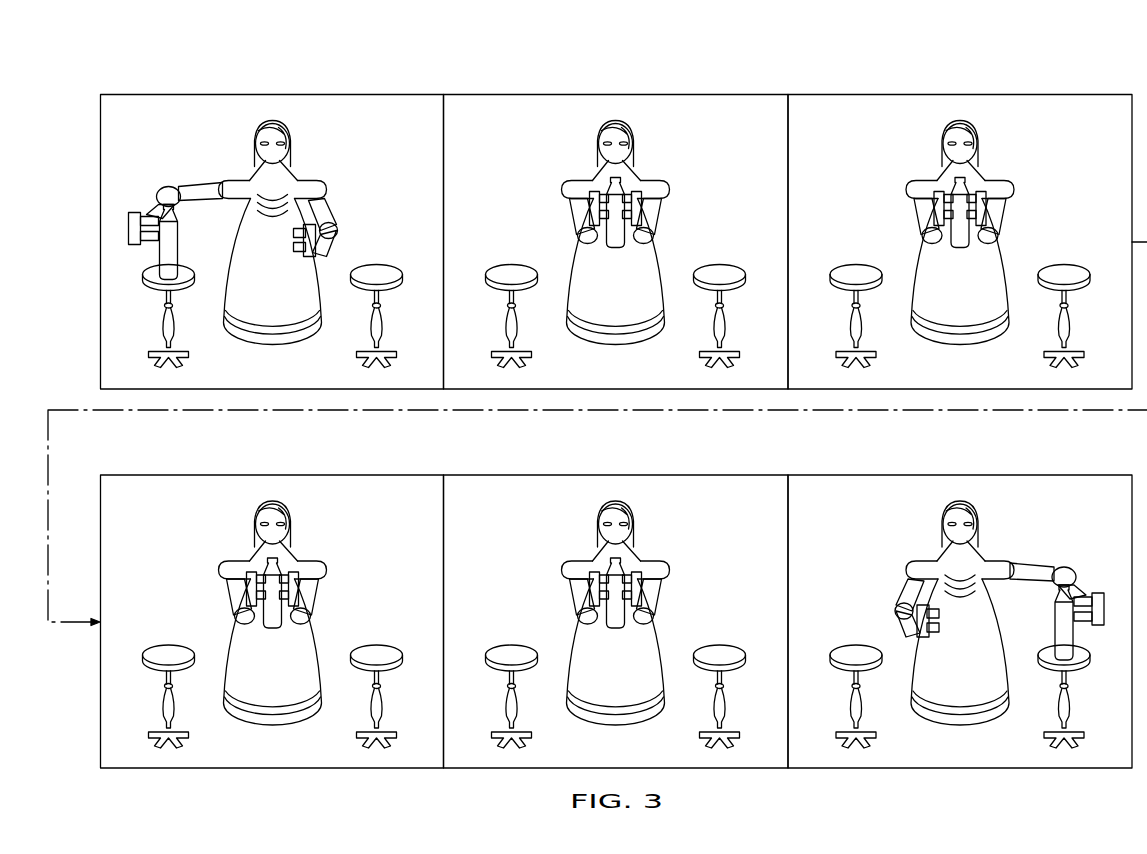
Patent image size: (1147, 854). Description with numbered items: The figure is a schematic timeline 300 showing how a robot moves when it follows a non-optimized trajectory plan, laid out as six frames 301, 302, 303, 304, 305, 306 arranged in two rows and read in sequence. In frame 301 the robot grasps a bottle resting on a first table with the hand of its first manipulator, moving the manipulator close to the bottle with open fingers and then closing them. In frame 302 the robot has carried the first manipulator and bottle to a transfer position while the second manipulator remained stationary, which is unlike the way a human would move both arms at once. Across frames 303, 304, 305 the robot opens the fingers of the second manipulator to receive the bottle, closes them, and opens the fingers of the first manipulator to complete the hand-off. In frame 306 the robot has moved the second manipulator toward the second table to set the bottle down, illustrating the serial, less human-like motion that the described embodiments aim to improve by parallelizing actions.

The timeline 300 is at (56, 80).
The frame 301 is at (334, 94).
The frame 302 is at (676, 94).
The frame 303 is at (1021, 94).
The frame 304 is at (334, 475).
The frame 305 is at (676, 475).
The frame 306 is at (1021, 475).